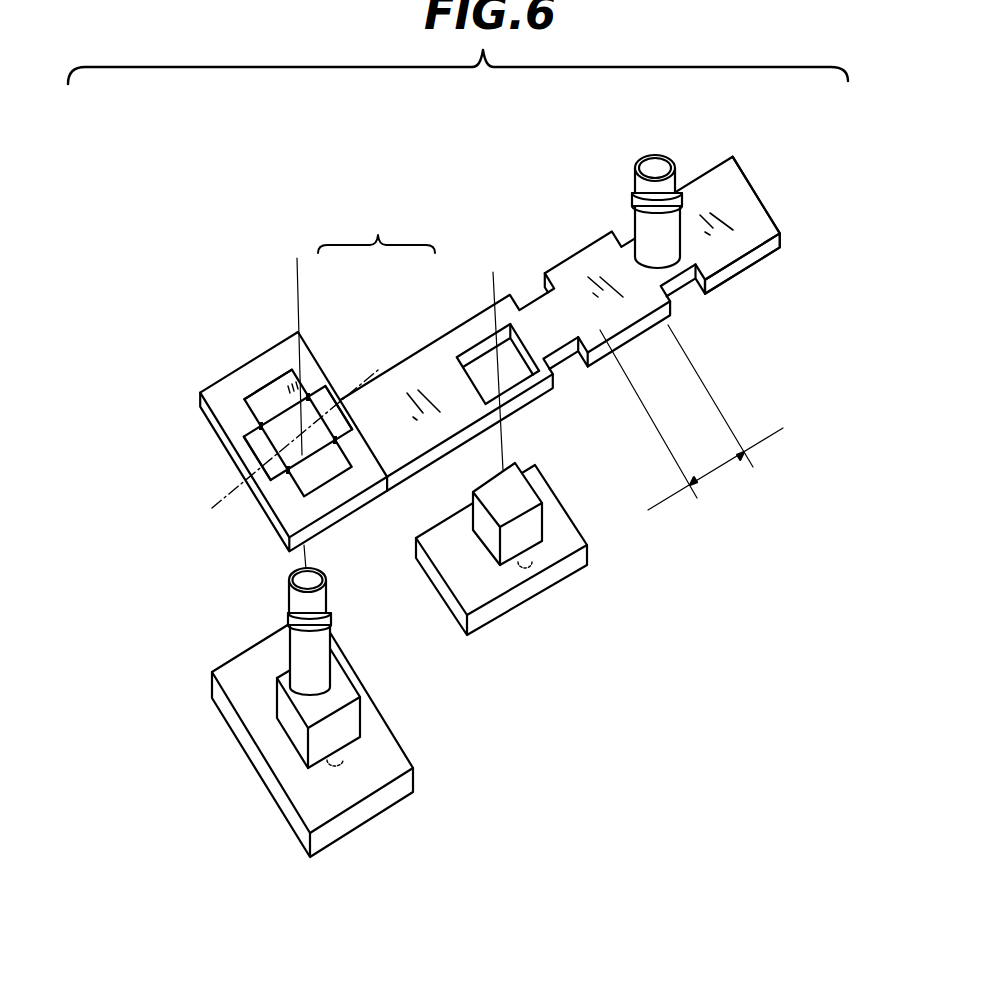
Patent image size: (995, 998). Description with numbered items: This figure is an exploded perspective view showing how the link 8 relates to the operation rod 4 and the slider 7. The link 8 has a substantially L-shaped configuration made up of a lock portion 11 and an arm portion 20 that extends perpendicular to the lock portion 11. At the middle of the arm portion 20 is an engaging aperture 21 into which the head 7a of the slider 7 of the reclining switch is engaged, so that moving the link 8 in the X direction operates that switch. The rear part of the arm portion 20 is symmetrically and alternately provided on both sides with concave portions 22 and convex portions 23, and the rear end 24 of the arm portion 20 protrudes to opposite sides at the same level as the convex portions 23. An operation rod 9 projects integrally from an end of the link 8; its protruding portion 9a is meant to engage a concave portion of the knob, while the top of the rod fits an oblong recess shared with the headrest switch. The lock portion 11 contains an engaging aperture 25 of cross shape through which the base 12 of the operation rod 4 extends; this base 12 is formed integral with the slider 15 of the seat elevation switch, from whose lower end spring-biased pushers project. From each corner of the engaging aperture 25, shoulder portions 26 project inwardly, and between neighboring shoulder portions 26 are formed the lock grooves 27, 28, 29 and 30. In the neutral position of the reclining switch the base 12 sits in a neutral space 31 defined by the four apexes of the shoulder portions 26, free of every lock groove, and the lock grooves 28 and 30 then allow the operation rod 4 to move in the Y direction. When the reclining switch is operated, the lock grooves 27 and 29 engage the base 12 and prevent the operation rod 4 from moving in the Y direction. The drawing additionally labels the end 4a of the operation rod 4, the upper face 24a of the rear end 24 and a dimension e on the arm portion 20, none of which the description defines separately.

The operation rod 4 is at (317, 643).
The tip of positioning pin 4a is at (290, 616).
The slider 7 is at (507, 600).
The head 7a is at (530, 528).
The link 8 is at (339, 346).
The operation rod 9 is at (653, 175).
The protruding portion 9a is at (633, 195).
The lock portion 11 is at (308, 343).
The base 12 is at (343, 730).
The slider 15 is at (270, 752).
The arm portion 20 is at (447, 340).
The engaging aperture 21 is at (510, 382).
The concave portions 22 is at (624, 240).
The convex portions 23 is at (585, 257).
The rear end 24 is at (753, 258).
The top surface of end portion 24a is at (767, 206).
The engaging aperture 25 is at (271, 441).
The shoulder portions 26 is at (310, 373).
The lock groove 27 is at (258, 460).
The lock groove 28 is at (317, 473).
The lock groove 29 is at (350, 398).
The lock groove 30 is at (277, 398).
The neutral space 31 is at (275, 454).
The dimension e is at (706, 417).